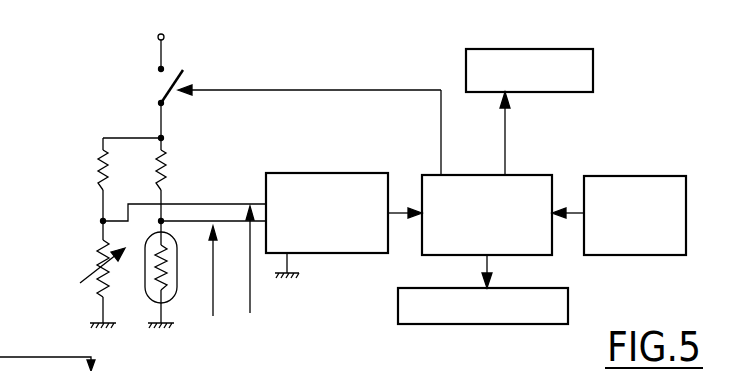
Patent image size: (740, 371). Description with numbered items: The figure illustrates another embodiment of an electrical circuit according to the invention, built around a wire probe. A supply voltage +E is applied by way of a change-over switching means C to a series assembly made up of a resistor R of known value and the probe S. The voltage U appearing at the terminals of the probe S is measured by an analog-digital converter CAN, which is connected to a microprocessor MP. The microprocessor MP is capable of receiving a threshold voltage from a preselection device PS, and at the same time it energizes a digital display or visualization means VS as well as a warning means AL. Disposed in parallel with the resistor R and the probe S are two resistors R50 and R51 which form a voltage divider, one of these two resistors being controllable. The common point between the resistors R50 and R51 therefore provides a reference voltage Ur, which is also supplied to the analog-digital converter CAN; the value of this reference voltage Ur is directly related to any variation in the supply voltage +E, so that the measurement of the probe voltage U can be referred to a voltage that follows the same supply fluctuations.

The supply voltage E is at (146, 44).
The change-over switching means C is at (185, 78).
The resistor R50 is at (77, 181).
The resistor R is at (170, 181).
The resistor R51 is at (96, 238).
The probe S is at (174, 292).
The voltage at the terminals of the probe U is at (218, 271).
The reference voltage Ur is at (250, 208).
The analog-digital converter CAN is at (334, 173).
The microprocessor MP is at (477, 175).
The warning means AL is at (541, 49).
The preselection device PS is at (635, 176).
The digital display or visualization means VS is at (499, 325).